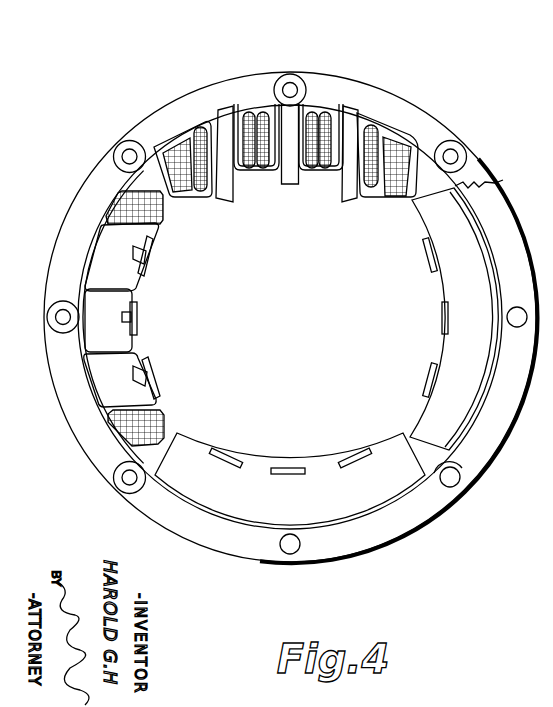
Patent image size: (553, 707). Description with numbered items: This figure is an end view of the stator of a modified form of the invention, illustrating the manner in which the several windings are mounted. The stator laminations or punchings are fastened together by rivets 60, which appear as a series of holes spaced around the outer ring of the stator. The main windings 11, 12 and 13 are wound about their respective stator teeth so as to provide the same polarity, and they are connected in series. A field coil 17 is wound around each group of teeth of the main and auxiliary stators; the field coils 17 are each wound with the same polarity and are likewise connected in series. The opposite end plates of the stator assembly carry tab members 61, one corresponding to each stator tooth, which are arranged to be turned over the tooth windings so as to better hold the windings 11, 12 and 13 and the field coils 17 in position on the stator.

The main winding 11 is at (249, 168).
The main winding 12 is at (263, 168).
The main winding 13 is at (325, 168).
The field coil 17 is at (396, 197).
The rivets 60 is at (287, 80).
The tab members 61 is at (228, 200).